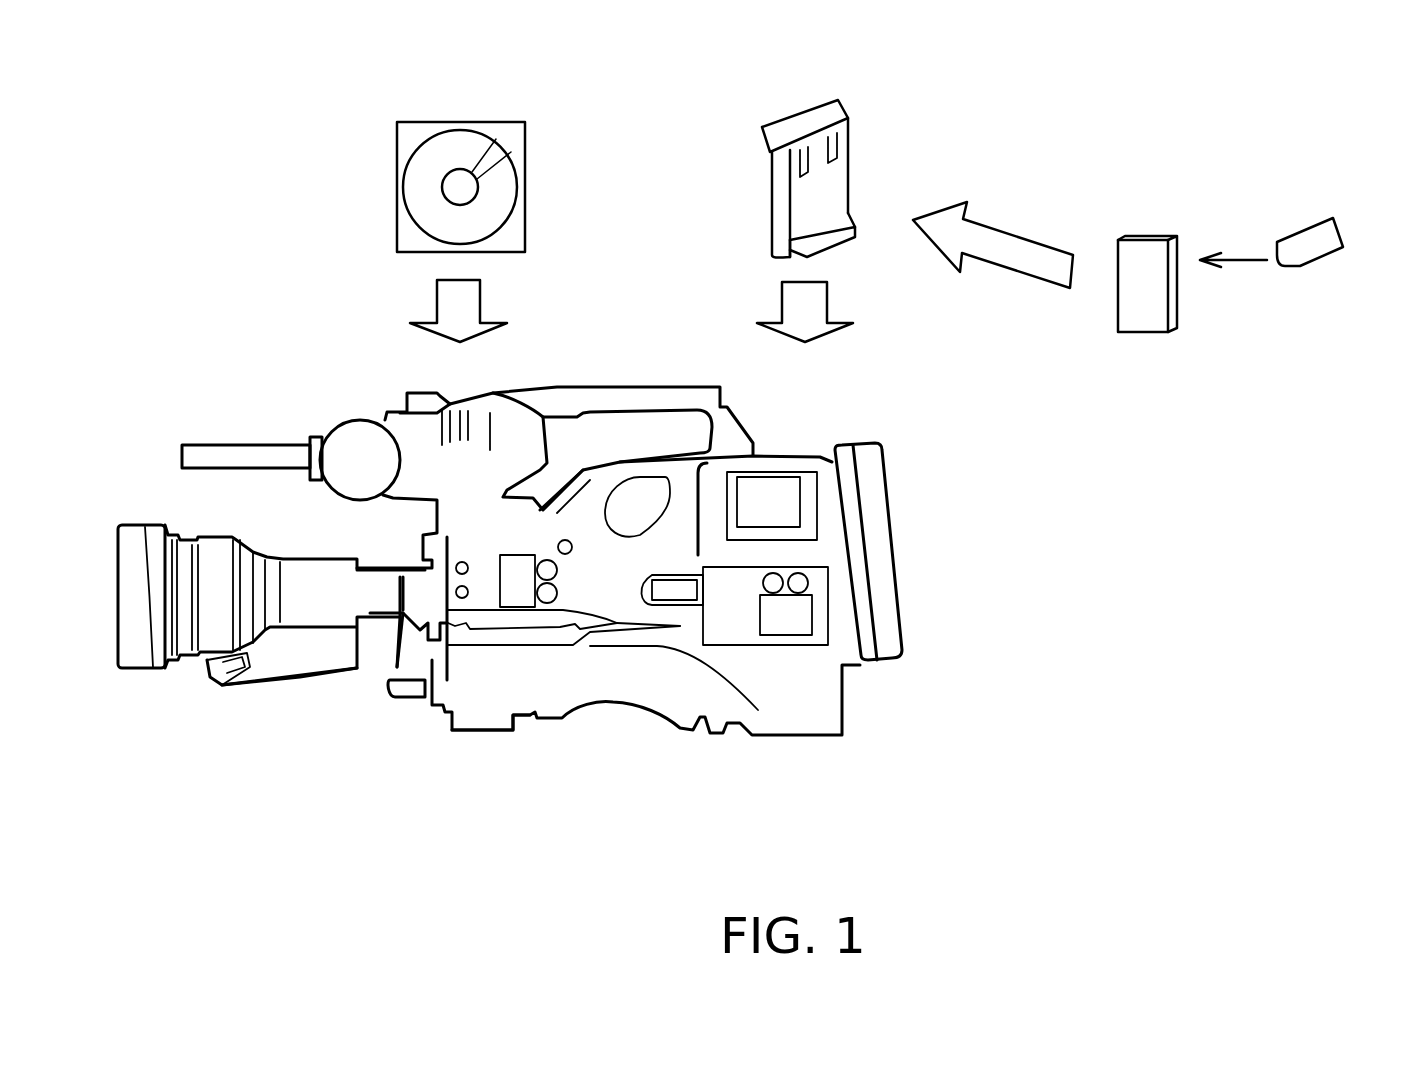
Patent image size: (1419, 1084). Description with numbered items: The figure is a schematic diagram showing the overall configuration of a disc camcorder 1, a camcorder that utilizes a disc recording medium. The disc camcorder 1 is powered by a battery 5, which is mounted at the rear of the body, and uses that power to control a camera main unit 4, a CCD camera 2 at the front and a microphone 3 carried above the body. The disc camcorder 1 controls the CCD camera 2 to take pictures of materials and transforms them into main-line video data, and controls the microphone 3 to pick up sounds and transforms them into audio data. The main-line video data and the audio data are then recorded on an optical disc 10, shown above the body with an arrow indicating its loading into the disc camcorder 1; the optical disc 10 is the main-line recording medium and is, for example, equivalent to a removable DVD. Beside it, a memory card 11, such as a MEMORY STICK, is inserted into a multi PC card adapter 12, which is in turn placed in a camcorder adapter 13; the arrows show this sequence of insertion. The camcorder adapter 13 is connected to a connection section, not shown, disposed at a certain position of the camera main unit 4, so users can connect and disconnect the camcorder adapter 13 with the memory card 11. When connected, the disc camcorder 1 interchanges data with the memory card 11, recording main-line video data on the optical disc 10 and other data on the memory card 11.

The disc camcorder 1 is at (902, 690).
The CCD camera 2 is at (137, 672).
The microphone 3 is at (197, 445).
The camera main unit 4 is at (487, 720).
The battery 5 is at (882, 608).
The optical disc 10 is at (423, 122).
The memory card 11 is at (1340, 248).
The multi PC card adapter 12 is at (1135, 238).
The camcorder adapter 13 is at (780, 124).